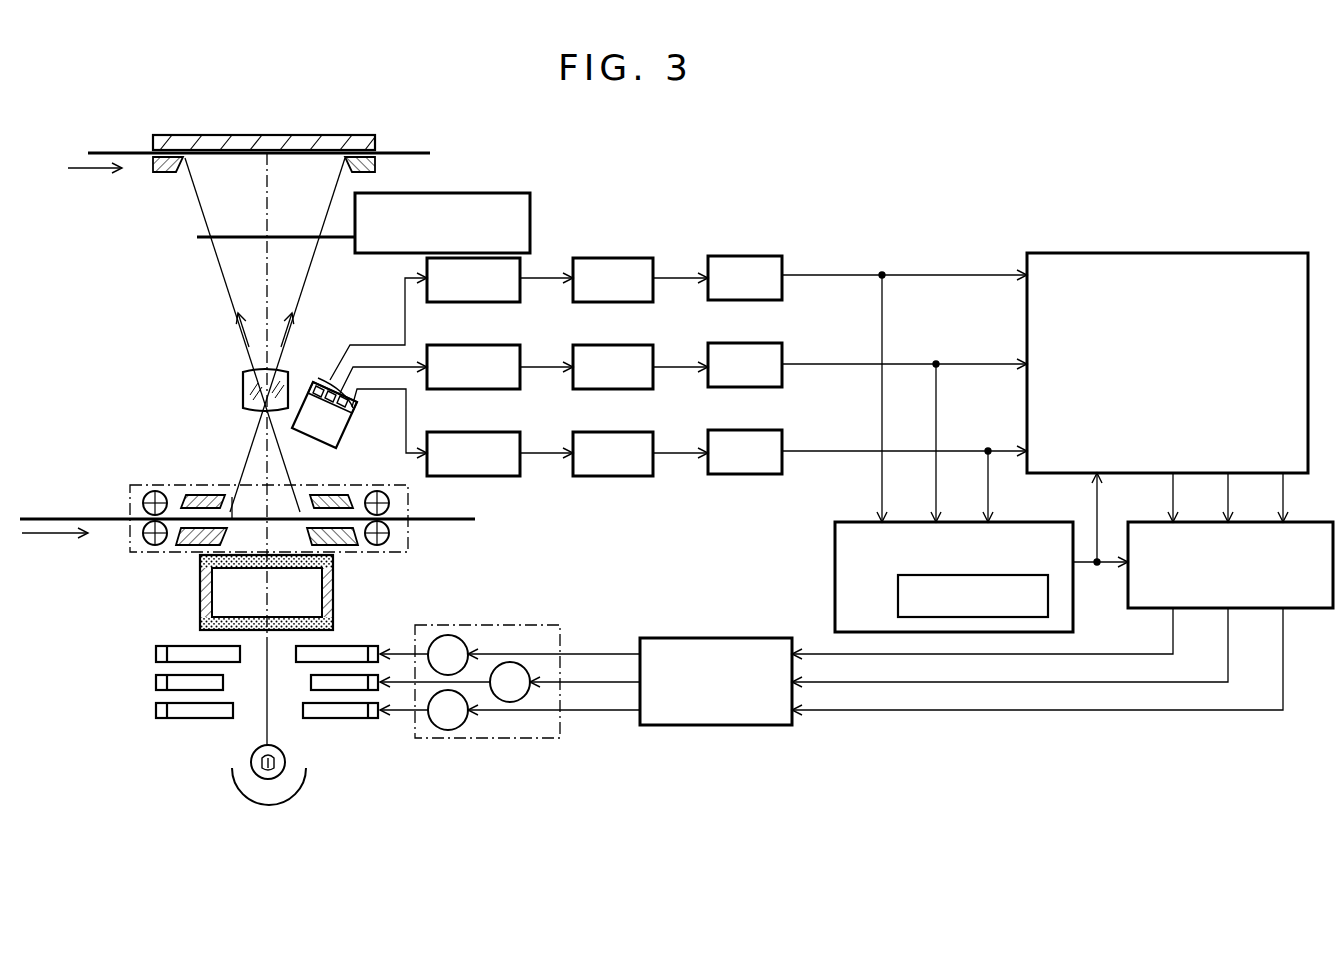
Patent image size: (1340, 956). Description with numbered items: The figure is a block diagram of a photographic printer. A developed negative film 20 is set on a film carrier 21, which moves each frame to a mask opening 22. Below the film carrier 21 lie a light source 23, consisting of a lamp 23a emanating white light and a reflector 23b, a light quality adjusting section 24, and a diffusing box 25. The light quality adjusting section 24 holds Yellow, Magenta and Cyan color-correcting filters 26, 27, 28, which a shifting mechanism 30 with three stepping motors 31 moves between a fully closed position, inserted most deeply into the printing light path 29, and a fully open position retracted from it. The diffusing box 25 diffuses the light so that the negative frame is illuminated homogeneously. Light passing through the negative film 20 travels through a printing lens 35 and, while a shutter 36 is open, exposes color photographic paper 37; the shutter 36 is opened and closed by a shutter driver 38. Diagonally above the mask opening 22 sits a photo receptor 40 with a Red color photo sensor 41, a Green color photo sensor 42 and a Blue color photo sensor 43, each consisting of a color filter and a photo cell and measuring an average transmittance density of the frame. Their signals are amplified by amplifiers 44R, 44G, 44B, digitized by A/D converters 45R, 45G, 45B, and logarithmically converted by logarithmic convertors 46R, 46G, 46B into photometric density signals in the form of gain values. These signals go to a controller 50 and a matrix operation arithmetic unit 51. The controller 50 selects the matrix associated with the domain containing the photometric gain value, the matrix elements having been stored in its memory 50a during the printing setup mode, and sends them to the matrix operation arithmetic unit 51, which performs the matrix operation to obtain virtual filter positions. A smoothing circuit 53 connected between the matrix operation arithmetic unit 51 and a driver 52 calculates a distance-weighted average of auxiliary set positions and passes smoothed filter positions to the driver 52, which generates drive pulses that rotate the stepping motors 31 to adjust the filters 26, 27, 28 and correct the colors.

The negative film 20 is at (88, 517).
The film carrier 21 is at (160, 485).
The mask opening 22 is at (240, 500).
The light source 23 is at (229, 810).
The lamp 23a is at (252, 762).
The reflector 23b is at (272, 798).
The light quality adjusting section 24 is at (278, 724).
The diffusing box 25 is at (333, 583).
The color-correcting filter 26 is at (156, 711).
The color-correcting filter 27 is at (156, 681).
The color-correcting filter 28 is at (180, 646).
The printing light path 29 is at (267, 729).
The shifting mechanism 30 is at (487, 667).
The stepping motor 31 is at (447, 635).
The printing lens 35 is at (244, 378).
The shutter 36 is at (205, 240).
The color photographic paper 37 is at (238, 157).
The shutter driver 38 is at (532, 225).
The photo receptor 40 is at (346, 400).
The Red color photo sensor 41 is at (318, 378).
The Green color photo sensor 42 is at (335, 427).
The Blue color photo sensor 43 is at (354, 404).
The amplifier 44R is at (498, 303).
The amplifier 44G is at (498, 390).
The amplifier 44B is at (498, 477).
The A/D converter 45R is at (640, 303).
The A/D converter 45G is at (640, 390).
The A/D converter 45B is at (640, 477).
The logarithmic convertor 46R is at (770, 301).
The logarithmic convertor 46G is at (770, 388).
The logarithmic convertor 46B is at (770, 475).
The controller 50 is at (917, 577).
The memory 50a is at (898, 597).
The matrix operation arithmetic unit 51 is at (1168, 252).
The driver 52 is at (713, 727).
The smoothing circuit 53 is at (1305, 610).